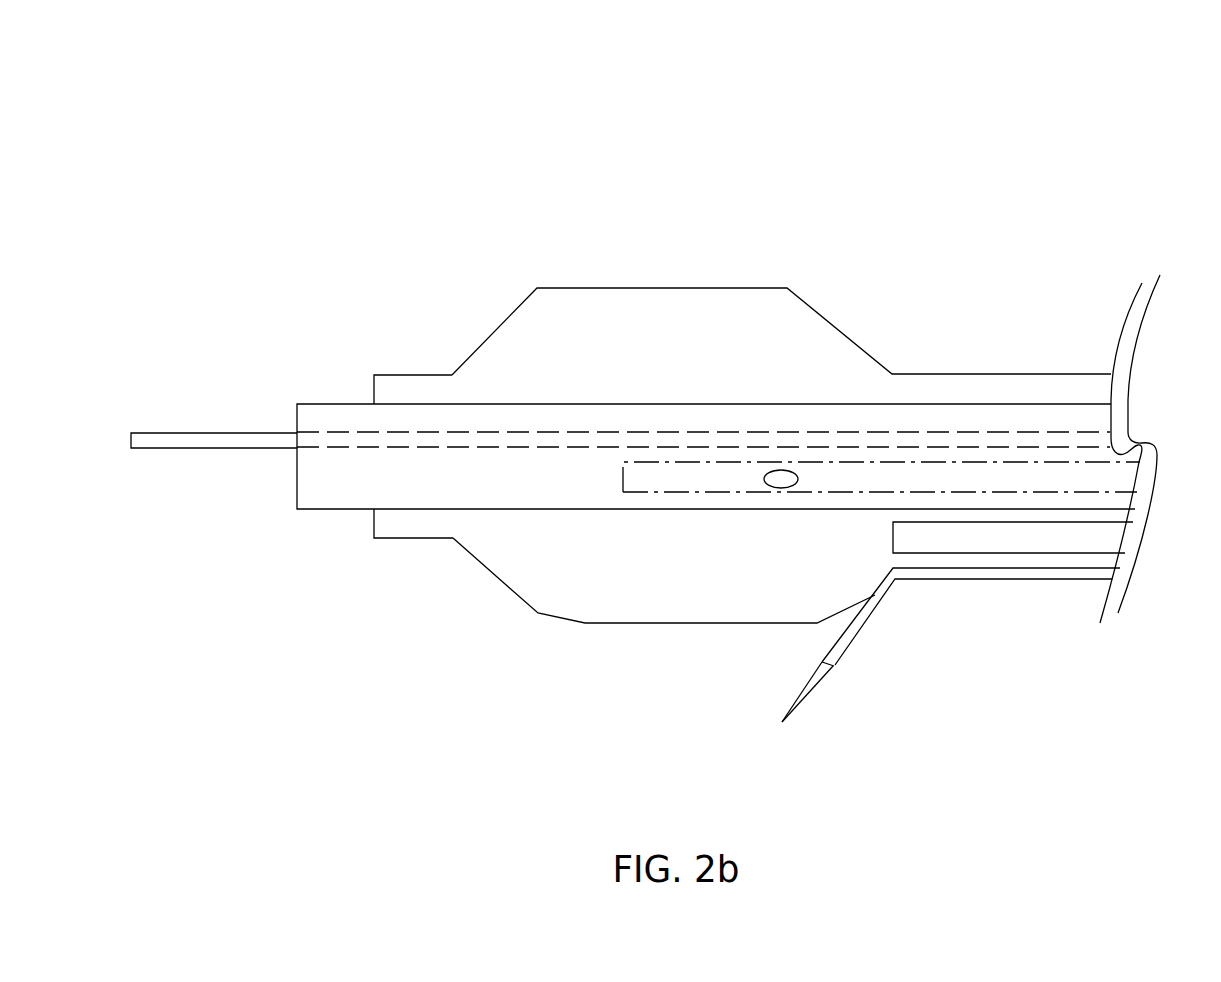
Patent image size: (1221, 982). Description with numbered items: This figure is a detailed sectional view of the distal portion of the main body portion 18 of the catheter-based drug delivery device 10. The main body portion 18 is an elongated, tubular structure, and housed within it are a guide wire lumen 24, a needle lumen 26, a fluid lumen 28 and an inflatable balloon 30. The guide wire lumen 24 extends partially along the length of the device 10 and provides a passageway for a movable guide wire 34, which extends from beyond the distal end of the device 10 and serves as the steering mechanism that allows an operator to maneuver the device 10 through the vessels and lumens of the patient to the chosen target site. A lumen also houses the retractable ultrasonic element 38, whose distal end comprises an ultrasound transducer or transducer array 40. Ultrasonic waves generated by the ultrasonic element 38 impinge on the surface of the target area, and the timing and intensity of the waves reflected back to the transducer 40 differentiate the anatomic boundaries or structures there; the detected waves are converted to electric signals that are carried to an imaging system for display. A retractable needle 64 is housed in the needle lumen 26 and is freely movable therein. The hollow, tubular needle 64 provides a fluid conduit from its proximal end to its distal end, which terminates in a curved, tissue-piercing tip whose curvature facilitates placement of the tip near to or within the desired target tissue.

The catheter-based drug delivery device 10 is at (1091, 141).
The main body portion 18 is at (601, 198).
The guide wire lumen 24 is at (511, 438).
The needle lumen 26 is at (860, 630).
The fluid lumen 28 is at (990, 539).
The inflatable balloon 30 is at (698, 288).
The guide wire 34 is at (196, 437).
The ultrasonic element 38 is at (948, 472).
The ultrasound transducer 40 is at (782, 473).
The needle 64 is at (802, 697).